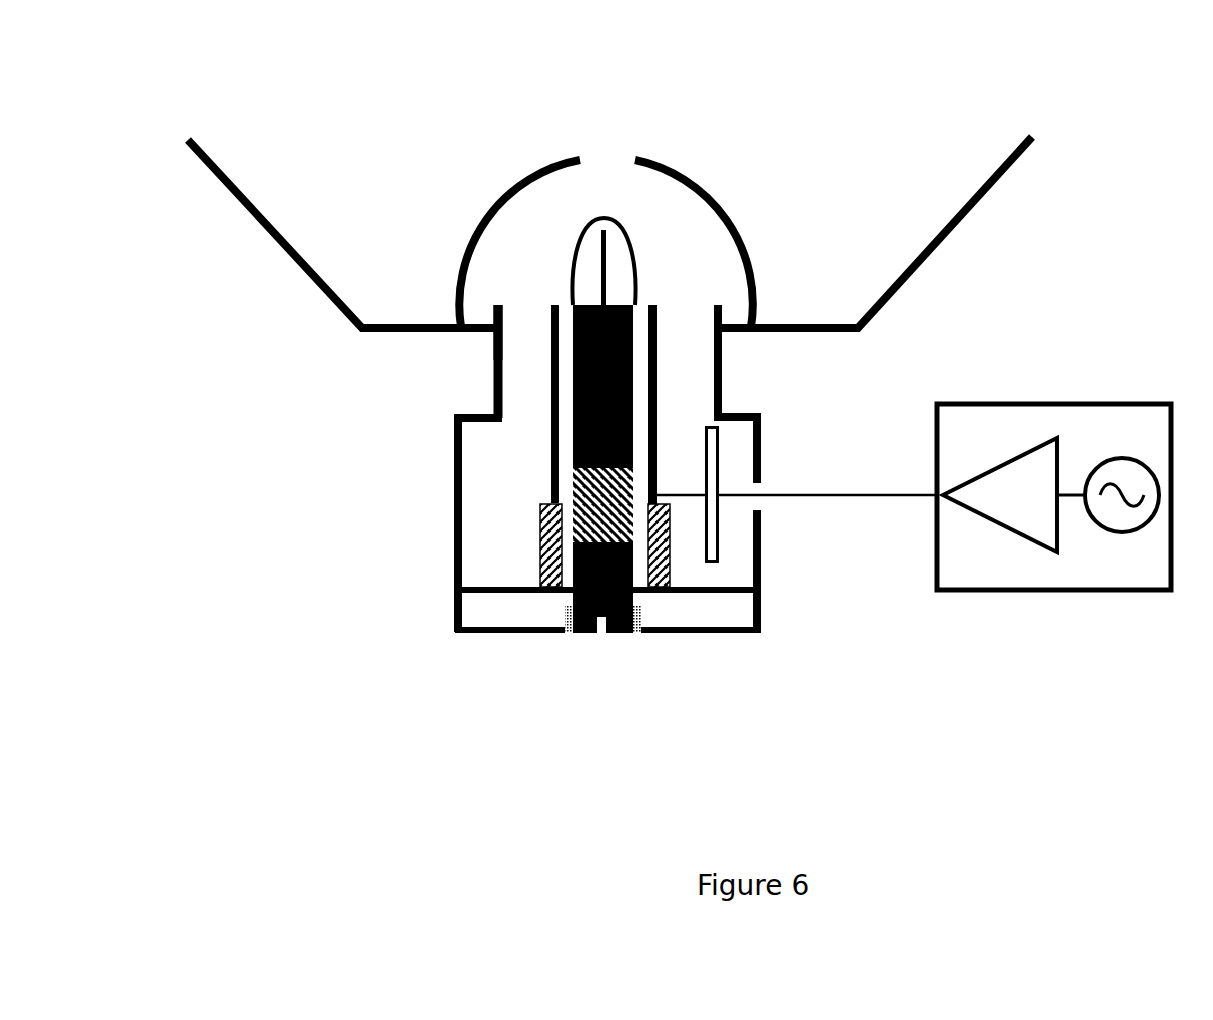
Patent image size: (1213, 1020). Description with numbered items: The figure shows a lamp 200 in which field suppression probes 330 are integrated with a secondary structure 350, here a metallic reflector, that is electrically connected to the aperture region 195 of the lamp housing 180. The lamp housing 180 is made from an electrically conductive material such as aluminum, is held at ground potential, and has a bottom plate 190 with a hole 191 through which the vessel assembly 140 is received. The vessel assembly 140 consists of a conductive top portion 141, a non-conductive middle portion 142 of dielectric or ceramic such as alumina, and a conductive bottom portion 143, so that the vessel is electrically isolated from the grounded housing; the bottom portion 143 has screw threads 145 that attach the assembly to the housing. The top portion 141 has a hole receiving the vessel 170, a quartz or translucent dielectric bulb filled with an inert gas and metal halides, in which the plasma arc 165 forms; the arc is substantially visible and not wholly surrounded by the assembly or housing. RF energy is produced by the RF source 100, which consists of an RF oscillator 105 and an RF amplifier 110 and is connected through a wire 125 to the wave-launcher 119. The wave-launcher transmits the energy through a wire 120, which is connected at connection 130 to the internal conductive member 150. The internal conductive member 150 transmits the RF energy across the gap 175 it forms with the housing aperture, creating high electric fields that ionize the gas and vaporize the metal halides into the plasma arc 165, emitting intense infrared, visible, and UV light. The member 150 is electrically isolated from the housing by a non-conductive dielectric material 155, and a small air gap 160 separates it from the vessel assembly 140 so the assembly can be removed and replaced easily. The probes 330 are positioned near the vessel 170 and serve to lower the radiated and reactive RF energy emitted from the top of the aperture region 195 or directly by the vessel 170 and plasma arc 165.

The RF source 100 is at (1038, 402).
The RF oscillator 105 is at (1120, 533).
The RF amplifier 110 is at (993, 523).
The wave-launcher 119 is at (713, 555).
The wire 120 is at (679, 495).
The wire 125 is at (862, 495).
The connection 130 is at (657, 503).
The vessel assembly 140 is at (583, 637).
The top portion 141 is at (633, 425).
The middle portion 142 is at (578, 487).
The bottom portion 143 is at (565, 595).
The screw threads 145 is at (612, 633).
The internal conductive member 150 is at (550, 360).
The non-conductive dielectric material 155 is at (553, 528).
The air gap 160 is at (643, 378).
The plasma arc 165 is at (607, 270).
The vessel 170 is at (572, 284).
The gap 175 is at (523, 333).
The lamp housing 180 is at (453, 545).
The bottom plate 190 is at (455, 603).
The hole 191 is at (645, 633).
The aperture region 195 is at (495, 388).
The lamp 200 is at (487, 127).
The field suppression probes 330 is at (487, 217).
The secondary structure 350 is at (273, 240).